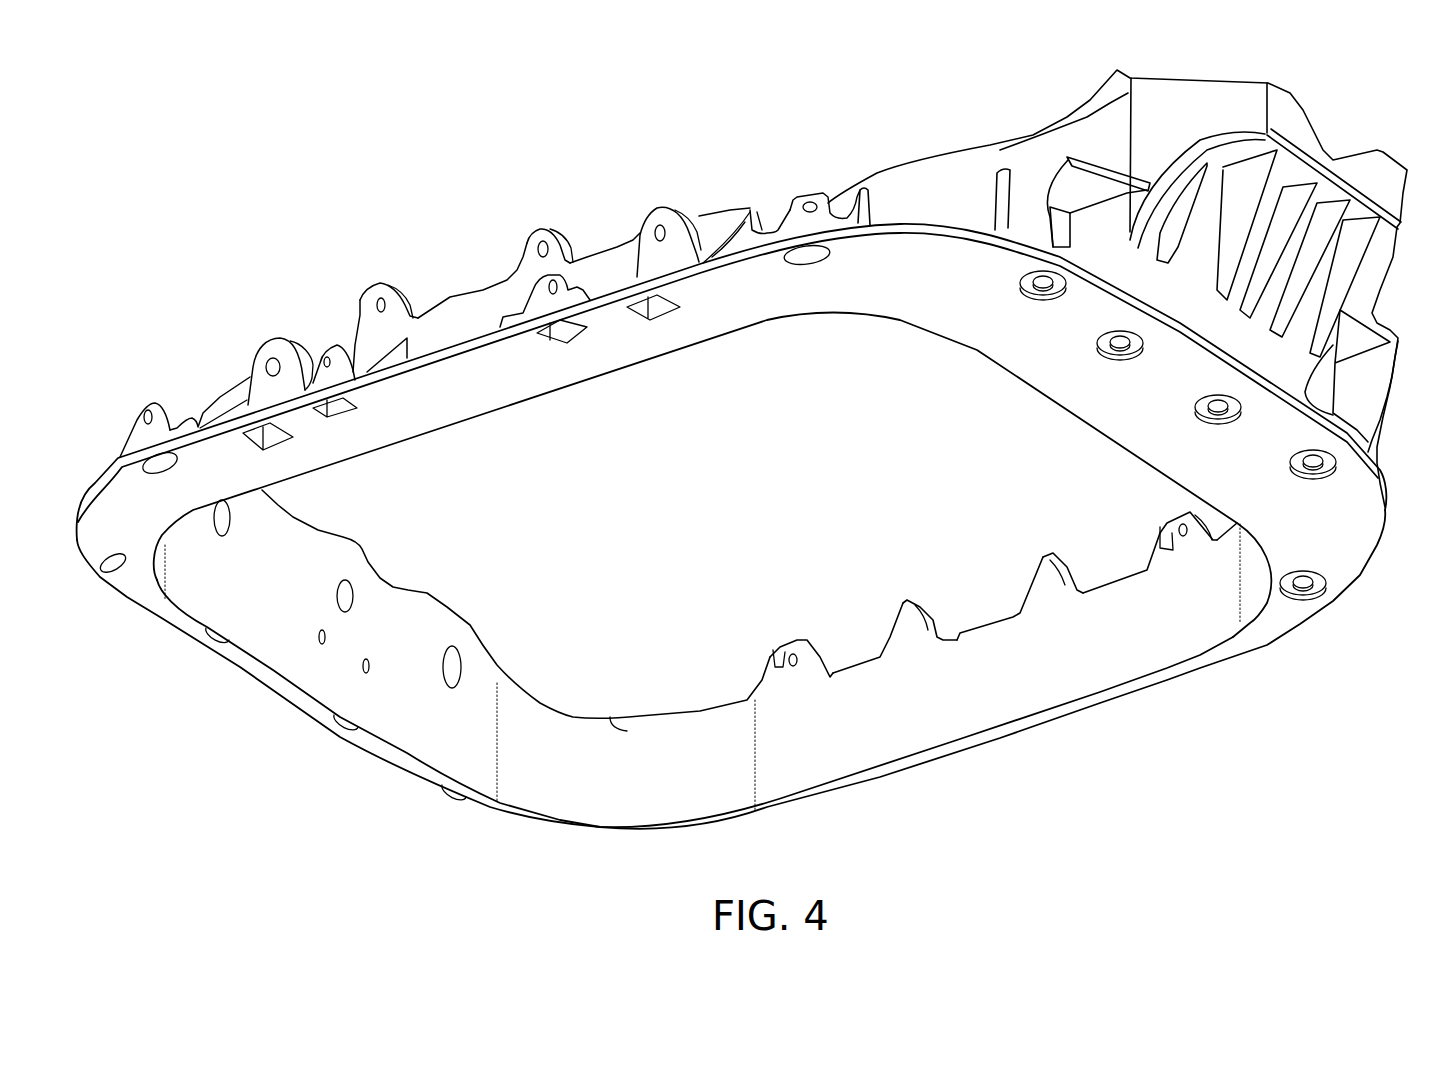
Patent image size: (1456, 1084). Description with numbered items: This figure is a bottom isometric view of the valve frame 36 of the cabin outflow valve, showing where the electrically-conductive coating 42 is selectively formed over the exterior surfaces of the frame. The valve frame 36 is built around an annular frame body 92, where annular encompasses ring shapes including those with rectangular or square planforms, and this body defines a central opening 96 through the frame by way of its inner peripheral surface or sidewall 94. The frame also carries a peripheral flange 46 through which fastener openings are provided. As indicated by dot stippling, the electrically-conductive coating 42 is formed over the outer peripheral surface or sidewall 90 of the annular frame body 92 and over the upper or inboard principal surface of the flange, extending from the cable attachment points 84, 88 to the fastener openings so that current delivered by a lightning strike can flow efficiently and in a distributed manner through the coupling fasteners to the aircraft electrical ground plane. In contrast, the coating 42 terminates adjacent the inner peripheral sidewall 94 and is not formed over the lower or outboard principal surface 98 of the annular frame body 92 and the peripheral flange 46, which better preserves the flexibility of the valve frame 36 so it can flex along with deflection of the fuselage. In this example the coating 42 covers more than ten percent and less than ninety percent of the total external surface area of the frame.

The valve frame 36 is at (761, 449).
The electrically-conductive coating 42 is at (467, 303).
The peripheral flange 46 is at (714, 250).
The cable attachment point 84 is at (913, 598).
The cable attachment point 88 is at (365, 307).
The outer peripheral surface or sidewall 90 is at (600, 260).
The annular frame body 92 is at (520, 693).
The inner peripheral surface or sidewall 94 is at (612, 718).
The central opening 96 is at (774, 526).
The lower or outboard principal surface 98 is at (1370, 542).